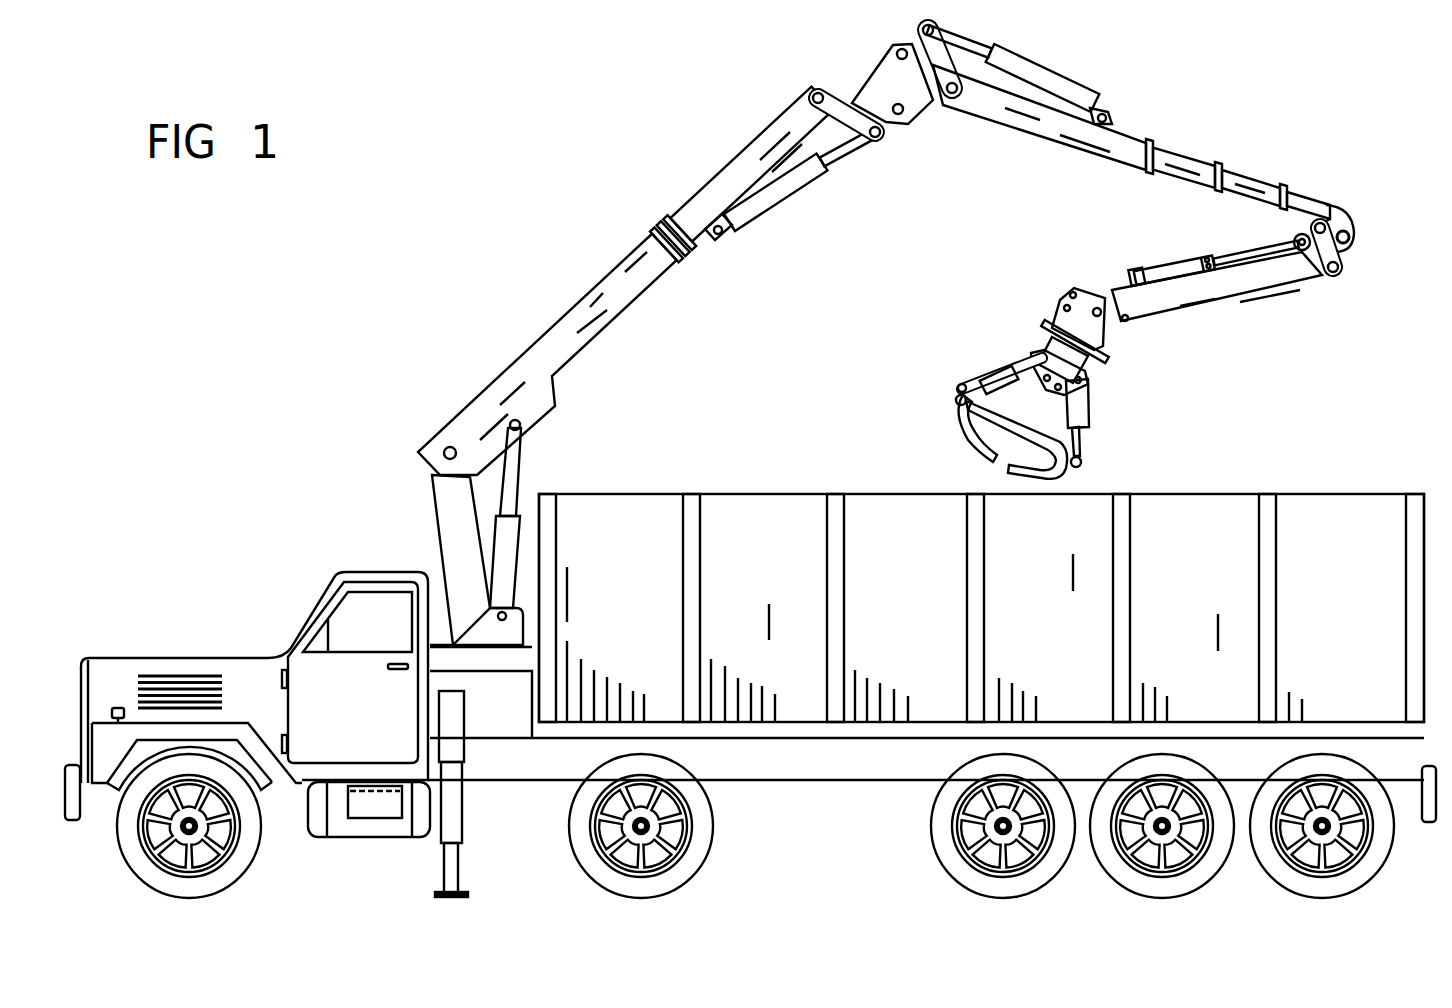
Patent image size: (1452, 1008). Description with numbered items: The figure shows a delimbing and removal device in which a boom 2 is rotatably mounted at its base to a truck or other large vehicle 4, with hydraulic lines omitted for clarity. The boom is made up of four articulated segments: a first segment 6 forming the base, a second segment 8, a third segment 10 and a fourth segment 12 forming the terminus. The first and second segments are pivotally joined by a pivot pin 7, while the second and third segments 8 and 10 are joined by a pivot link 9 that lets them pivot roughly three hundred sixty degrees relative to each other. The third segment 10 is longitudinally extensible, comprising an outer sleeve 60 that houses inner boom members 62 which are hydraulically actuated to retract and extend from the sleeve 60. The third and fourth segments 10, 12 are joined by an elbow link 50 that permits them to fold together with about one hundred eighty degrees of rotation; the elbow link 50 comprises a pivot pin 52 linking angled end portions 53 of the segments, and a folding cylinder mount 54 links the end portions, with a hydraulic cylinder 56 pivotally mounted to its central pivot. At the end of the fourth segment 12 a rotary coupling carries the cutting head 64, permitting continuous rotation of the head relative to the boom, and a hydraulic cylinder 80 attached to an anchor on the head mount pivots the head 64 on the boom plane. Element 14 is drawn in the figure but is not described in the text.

The boom 2 is at (659, 335).
The vehicle 4 is at (204, 620).
The first segment 6 is at (452, 505).
The pivot pin 7 is at (446, 431).
The second segment 8 is at (490, 387).
The pivot link 9 is at (858, 58).
The third segment 10 is at (1182, 156).
The fourth segment 12 is at (1204, 278).
The arm end head 14 is at (1366, 222).
The elbow link 50 is at (1318, 185).
The pivot pin 52 is at (1362, 238).
The angled end portions 53 is at (1365, 260).
The folding cylinder mount 54 is at (1296, 234).
The hydraulic cylinder 56 is at (1227, 268).
The outer sleeve 60 is at (1085, 147).
The inner boom members 62 is at (1197, 165).
The cutting head 64 is at (1028, 337).
The hydraulic cylinder 80 is at (1148, 281).